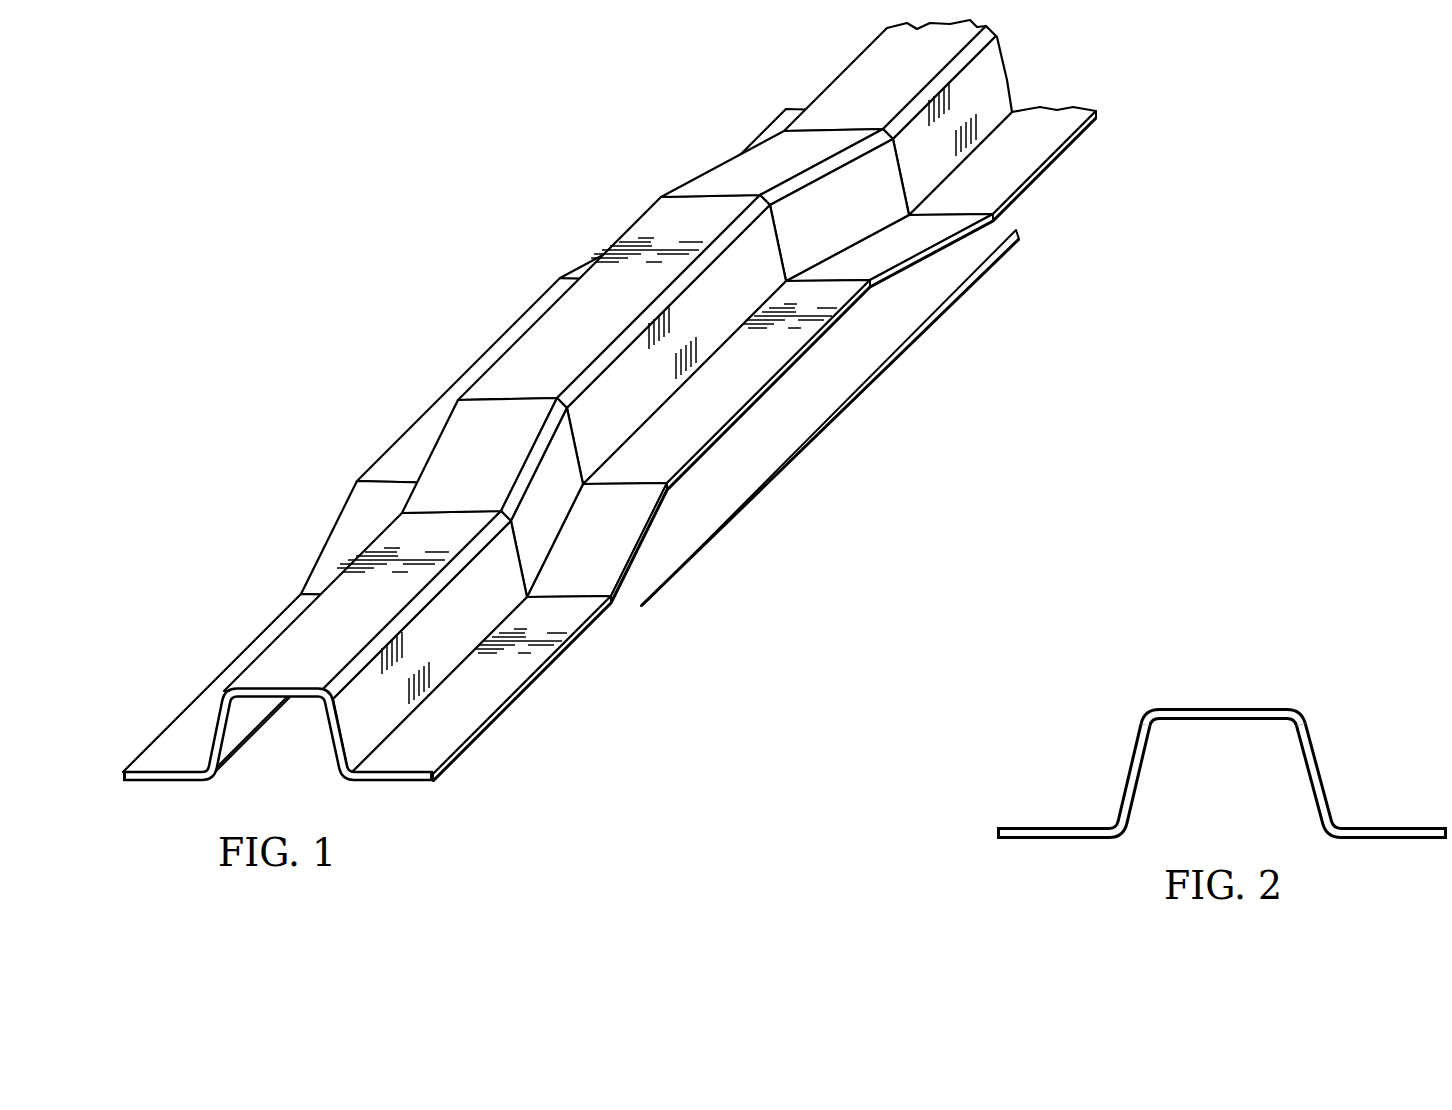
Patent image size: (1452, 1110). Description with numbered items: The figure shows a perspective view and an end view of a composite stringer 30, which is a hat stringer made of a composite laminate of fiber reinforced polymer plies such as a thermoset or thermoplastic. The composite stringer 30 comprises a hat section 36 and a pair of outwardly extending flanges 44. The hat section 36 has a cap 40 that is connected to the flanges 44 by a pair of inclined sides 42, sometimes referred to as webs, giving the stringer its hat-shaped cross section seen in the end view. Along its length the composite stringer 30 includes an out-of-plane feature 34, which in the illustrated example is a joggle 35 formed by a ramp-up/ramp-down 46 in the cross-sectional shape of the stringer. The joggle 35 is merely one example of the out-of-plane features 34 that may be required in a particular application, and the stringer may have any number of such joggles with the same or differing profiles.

In FIG. 1, the composite stringer 30 is at (581, 184).
In FIG. 2, the composite stringer 30 is at (1143, 666).
In FIG. 1, the out-of-plane feature 34 is at (463, 338).
In FIG. 1, the joggle 35 is at (848, 404).
In FIG. 1, the hat section 36 is at (608, 429).
In FIG. 2, the hat section 36 is at (1222, 760).
In FIG. 1, the cap 40 is at (283, 650).
In FIG. 2, the cap 40 is at (1222, 707).
In FIG. 1, the inclined sides 42 is at (217, 708).
In FIG. 2, the inclined sides 42 is at (1125, 771).
In FIG. 1, the flanges 44 is at (152, 755).
In FIG. 2, the flanges 44 is at (1053, 842).
In FIG. 1, the ramp-up/ramp-down 46 is at (736, 182).